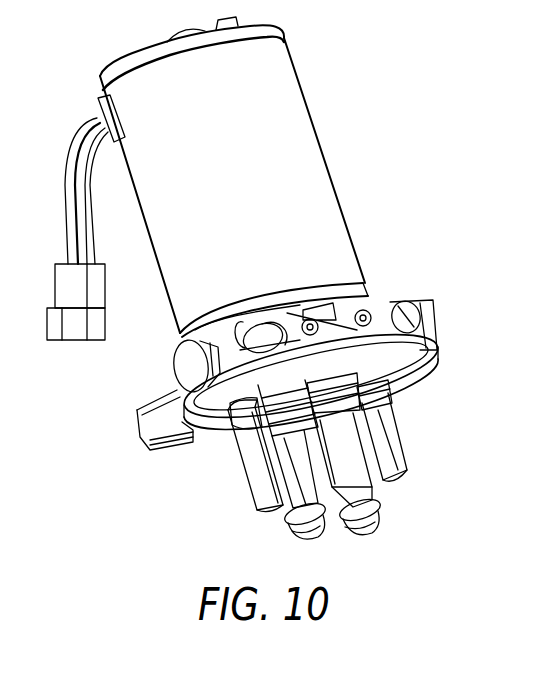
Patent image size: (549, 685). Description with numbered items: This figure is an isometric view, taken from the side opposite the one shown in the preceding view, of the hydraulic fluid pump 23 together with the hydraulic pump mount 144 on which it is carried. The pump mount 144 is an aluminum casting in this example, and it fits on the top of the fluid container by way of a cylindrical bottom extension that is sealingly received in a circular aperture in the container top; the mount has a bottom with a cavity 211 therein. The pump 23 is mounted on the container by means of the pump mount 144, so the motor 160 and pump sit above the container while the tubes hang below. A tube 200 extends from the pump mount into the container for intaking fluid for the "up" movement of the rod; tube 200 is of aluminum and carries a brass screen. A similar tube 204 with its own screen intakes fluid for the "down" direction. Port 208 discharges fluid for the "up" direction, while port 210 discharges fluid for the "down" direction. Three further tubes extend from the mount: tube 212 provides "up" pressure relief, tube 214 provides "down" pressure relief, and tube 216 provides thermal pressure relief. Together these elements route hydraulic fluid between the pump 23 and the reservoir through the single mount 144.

The motor 160 is at (298, 134).
The hydraulic fluid pump 23 is at (372, 284).
The port 208 is at (415, 300).
The cavity 211 is at (400, 380).
The hydraulic pump mount 144 is at (172, 452).
The port 210 is at (222, 420).
The tube 216 is at (262, 497).
The tube 204 is at (293, 508).
The tube 214 is at (343, 470).
The tube 212 is at (400, 467).
The tube 200 is at (370, 493).